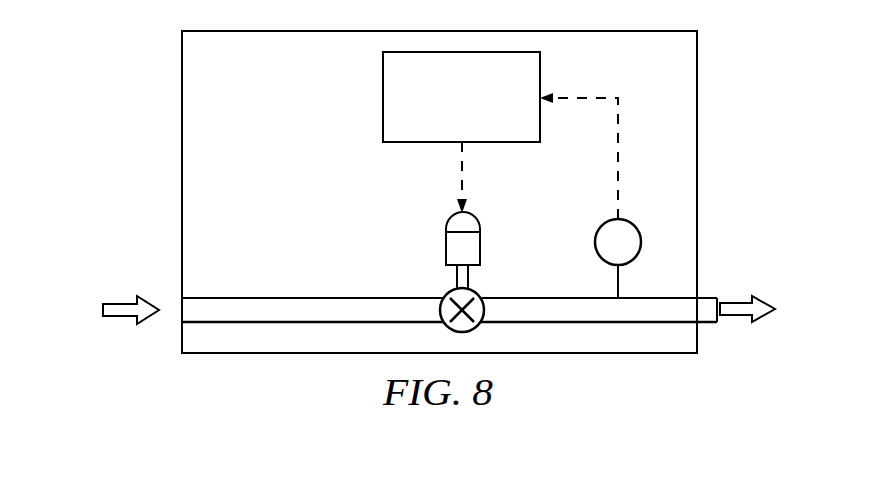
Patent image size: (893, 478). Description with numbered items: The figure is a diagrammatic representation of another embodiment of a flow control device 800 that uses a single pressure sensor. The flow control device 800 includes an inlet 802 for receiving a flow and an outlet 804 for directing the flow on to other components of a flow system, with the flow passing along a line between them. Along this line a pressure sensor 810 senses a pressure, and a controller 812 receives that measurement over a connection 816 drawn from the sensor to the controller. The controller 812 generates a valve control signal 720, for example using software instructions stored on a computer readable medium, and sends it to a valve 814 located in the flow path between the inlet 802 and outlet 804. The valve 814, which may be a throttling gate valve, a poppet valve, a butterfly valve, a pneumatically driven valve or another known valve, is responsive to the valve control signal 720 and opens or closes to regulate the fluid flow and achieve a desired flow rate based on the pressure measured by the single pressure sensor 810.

The flow control device 800 is at (281, 88).
The inlet 802 is at (168, 322).
The outlet 804 is at (707, 324).
The pressure sensor 810 is at (596, 243).
The controller 812 is at (483, 110).
The valve 814 is at (453, 288).
The sensor signal line 816 is at (592, 97).
The valve control signal 720 is at (462, 172).